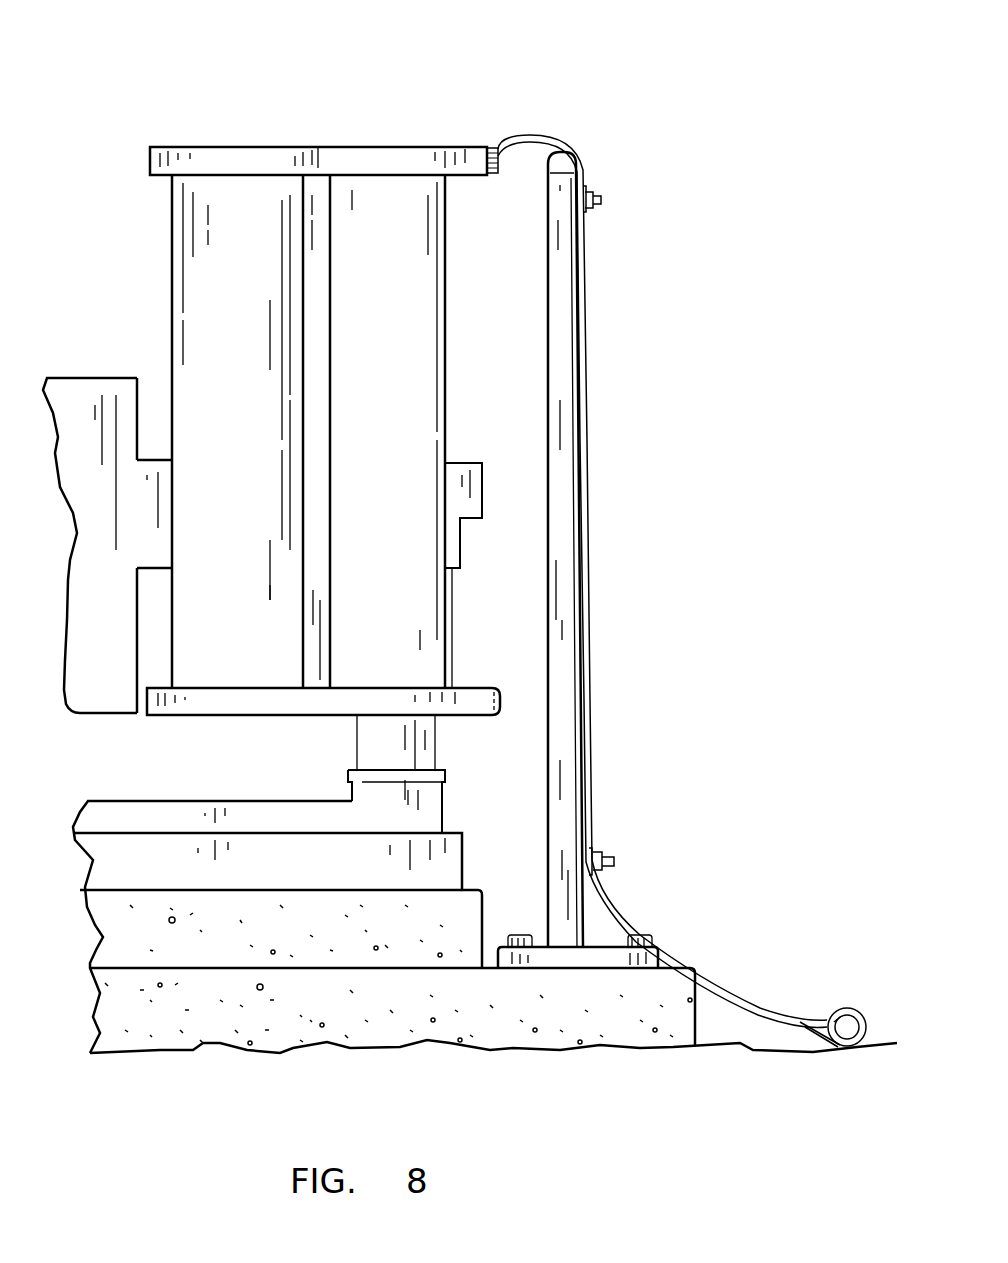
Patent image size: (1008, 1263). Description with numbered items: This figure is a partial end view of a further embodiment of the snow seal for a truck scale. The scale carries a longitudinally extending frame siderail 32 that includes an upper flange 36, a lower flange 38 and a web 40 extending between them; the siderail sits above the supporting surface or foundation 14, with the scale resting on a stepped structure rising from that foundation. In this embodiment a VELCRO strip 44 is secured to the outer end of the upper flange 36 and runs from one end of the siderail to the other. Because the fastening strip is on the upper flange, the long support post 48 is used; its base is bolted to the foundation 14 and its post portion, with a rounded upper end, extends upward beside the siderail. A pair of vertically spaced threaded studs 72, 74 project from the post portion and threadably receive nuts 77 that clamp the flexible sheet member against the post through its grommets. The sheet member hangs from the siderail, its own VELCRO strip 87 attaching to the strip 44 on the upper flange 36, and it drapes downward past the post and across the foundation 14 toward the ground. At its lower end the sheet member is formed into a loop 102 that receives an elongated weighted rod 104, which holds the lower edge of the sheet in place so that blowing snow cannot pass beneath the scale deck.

The foundation 14 is at (522, 1018).
The frame siderail 32 is at (333, 133).
The upper flange 36 is at (212, 148).
The lower flange 38 is at (233, 703).
The web 40 is at (302, 355).
The VELCRO strip 44 is at (487, 163).
The long support post 48 is at (570, 688).
The threaded stud 72 is at (617, 862).
The threaded stud 74 is at (602, 200).
The nut 77 is at (588, 212).
The VELCRO strip 87 is at (500, 173).
The loop 102 is at (812, 1027).
The weighted rod 104 is at (852, 1007).